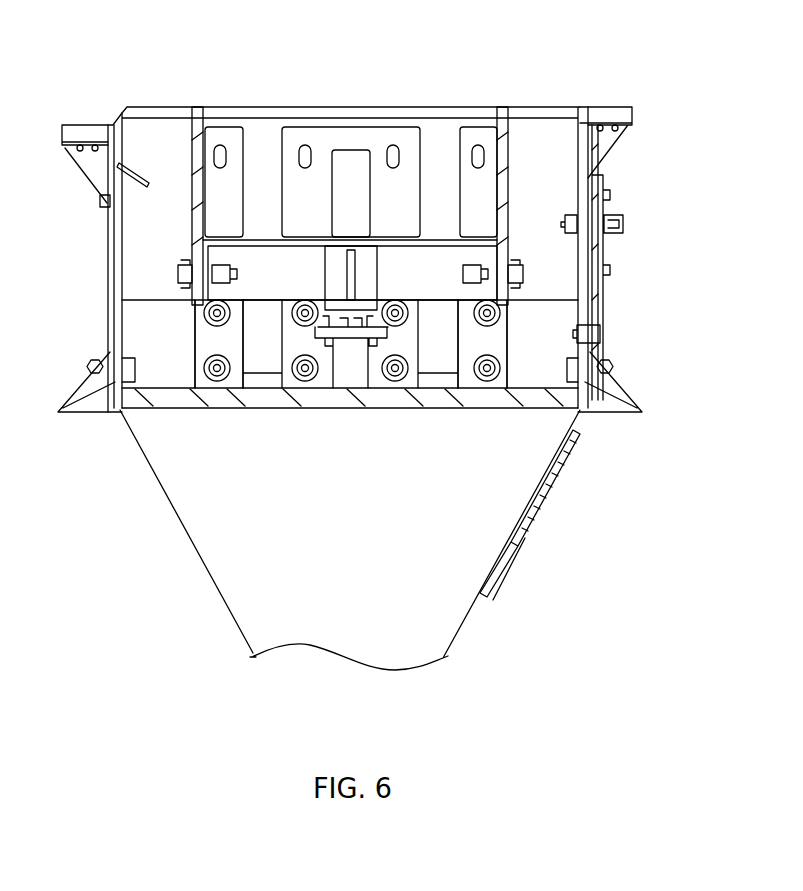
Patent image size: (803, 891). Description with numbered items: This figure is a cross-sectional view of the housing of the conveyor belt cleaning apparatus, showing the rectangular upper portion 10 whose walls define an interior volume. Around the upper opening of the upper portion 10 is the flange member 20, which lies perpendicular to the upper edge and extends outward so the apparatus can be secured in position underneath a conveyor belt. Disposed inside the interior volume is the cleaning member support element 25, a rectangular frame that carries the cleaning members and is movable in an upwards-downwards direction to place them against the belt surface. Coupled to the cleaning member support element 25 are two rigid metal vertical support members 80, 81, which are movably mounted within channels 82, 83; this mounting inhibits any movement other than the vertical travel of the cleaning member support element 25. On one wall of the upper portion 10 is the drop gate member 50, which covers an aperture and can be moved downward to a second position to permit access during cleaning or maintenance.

The upper portion 10 is at (647, 80).
The flange member 20 is at (85, 128).
The cleaning member support element 25 is at (407, 227).
The drop gate member 50 is at (598, 252).
The vertical support member 80 is at (253, 352).
The vertical support member 81 is at (438, 358).
The channel 82 is at (243, 332).
The channel 83 is at (460, 345).